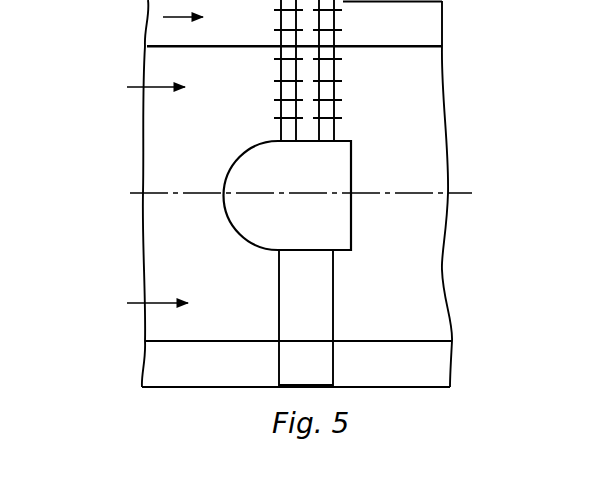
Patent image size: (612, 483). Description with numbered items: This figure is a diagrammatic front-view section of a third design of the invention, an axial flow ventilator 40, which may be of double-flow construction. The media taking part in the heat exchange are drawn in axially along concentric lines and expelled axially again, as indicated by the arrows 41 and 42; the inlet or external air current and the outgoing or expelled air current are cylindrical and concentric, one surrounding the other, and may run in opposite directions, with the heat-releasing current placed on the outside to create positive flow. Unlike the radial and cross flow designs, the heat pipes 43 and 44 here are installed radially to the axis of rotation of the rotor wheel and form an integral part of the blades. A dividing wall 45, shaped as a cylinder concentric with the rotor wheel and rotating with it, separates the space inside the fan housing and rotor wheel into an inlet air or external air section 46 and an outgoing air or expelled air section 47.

The axial flow ventilator 40 is at (130, 135).
The arrow 41 is at (255, 195).
The arrow 42 is at (223, 23).
The heat pipe 43 is at (287, 88).
The heat pipe 44 is at (328, 90).
The dividing wall 45 is at (422, 48).
The inlet air or external air section 46 is at (200, 28).
The outgoing air or expelled air section 47 is at (261, 264).